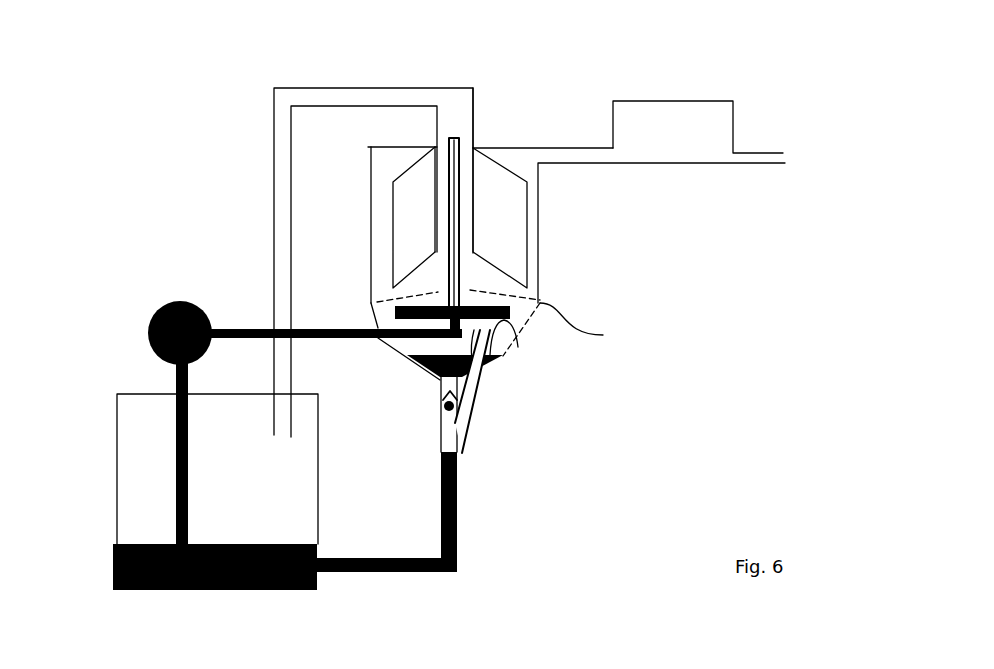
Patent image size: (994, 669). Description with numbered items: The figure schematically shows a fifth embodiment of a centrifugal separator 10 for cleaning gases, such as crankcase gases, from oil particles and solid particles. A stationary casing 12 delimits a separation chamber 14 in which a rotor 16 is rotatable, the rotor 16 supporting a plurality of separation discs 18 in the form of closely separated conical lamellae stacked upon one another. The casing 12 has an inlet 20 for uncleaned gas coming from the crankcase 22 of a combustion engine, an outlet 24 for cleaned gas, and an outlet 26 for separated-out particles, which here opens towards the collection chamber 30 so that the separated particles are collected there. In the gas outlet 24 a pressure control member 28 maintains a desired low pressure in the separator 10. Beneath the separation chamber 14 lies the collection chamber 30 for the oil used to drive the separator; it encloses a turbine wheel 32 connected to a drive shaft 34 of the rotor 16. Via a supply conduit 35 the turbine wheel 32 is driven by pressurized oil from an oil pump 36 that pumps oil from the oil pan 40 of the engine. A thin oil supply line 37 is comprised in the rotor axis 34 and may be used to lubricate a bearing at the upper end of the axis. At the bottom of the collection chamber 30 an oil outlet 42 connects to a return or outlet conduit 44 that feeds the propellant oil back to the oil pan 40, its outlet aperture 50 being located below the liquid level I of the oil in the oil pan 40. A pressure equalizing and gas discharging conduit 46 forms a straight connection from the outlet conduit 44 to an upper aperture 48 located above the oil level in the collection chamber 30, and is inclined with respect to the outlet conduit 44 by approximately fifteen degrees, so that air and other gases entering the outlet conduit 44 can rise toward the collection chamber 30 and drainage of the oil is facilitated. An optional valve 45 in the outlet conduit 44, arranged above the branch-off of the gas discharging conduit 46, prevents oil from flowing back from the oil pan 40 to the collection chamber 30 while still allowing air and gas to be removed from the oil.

The centrifugal separator 10 is at (600, 231).
The stationary casing 12 is at (368, 158).
The separation chamber 14 is at (383, 218).
The rotor 16 is at (498, 188).
The separation discs 18 is at (412, 208).
The inlet 20 is at (460, 107).
The crankcase 22 is at (318, 445).
The outlet 24 is at (572, 150).
The outlet for separated-out particles 26 is at (586, 328).
The pressure control member 28 is at (651, 128).
The collection chamber 30 is at (522, 327).
The turbine wheel 32 is at (393, 309).
The drive shaft 34 is at (458, 238).
The supply conduit 35 is at (345, 340).
The oil pump 36 is at (157, 312).
The oil supply line 37 is at (458, 222).
The oil pan 40 is at (253, 590).
The oil outlet 42 is at (423, 368).
The outlet conduit 44 is at (458, 473).
The valve 45 is at (442, 413).
The pressure equalizing and gas discharging conduit 46 is at (475, 395).
The upper aperture 48 is at (518, 347).
The outlet aperture 50 is at (318, 556).
The liquid level I is at (143, 544).